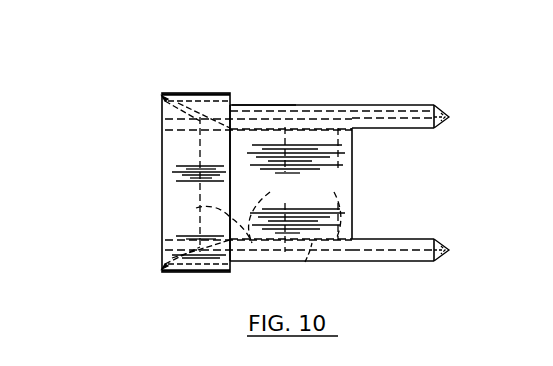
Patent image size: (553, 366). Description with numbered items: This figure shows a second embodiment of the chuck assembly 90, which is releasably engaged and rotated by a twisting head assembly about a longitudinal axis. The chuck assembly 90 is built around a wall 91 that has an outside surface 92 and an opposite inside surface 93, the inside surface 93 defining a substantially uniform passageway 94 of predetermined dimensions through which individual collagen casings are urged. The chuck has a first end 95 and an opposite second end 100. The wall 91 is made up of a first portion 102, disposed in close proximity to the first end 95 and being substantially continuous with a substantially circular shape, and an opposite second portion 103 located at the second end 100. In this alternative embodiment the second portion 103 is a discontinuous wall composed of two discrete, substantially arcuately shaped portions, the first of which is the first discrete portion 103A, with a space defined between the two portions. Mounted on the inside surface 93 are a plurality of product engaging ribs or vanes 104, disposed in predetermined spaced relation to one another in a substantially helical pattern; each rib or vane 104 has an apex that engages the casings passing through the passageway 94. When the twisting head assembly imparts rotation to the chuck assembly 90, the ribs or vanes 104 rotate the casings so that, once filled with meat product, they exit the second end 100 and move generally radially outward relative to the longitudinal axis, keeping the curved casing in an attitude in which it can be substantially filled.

The chuck assembly 90 is at (238, 74).
The wall 91 is at (305, 262).
The outside surface 92 is at (303, 108).
The inside surface 93 is at (196, 208).
The passageway 94 is at (337, 178).
The first end 95 is at (178, 149).
The second end 100 is at (450, 248).
The first portion 102 is at (265, 92).
The second portion 103 is at (366, 100).
The first discrete portion 103A is at (410, 107).
The product engaging ribs or vanes 104 is at (275, 178).